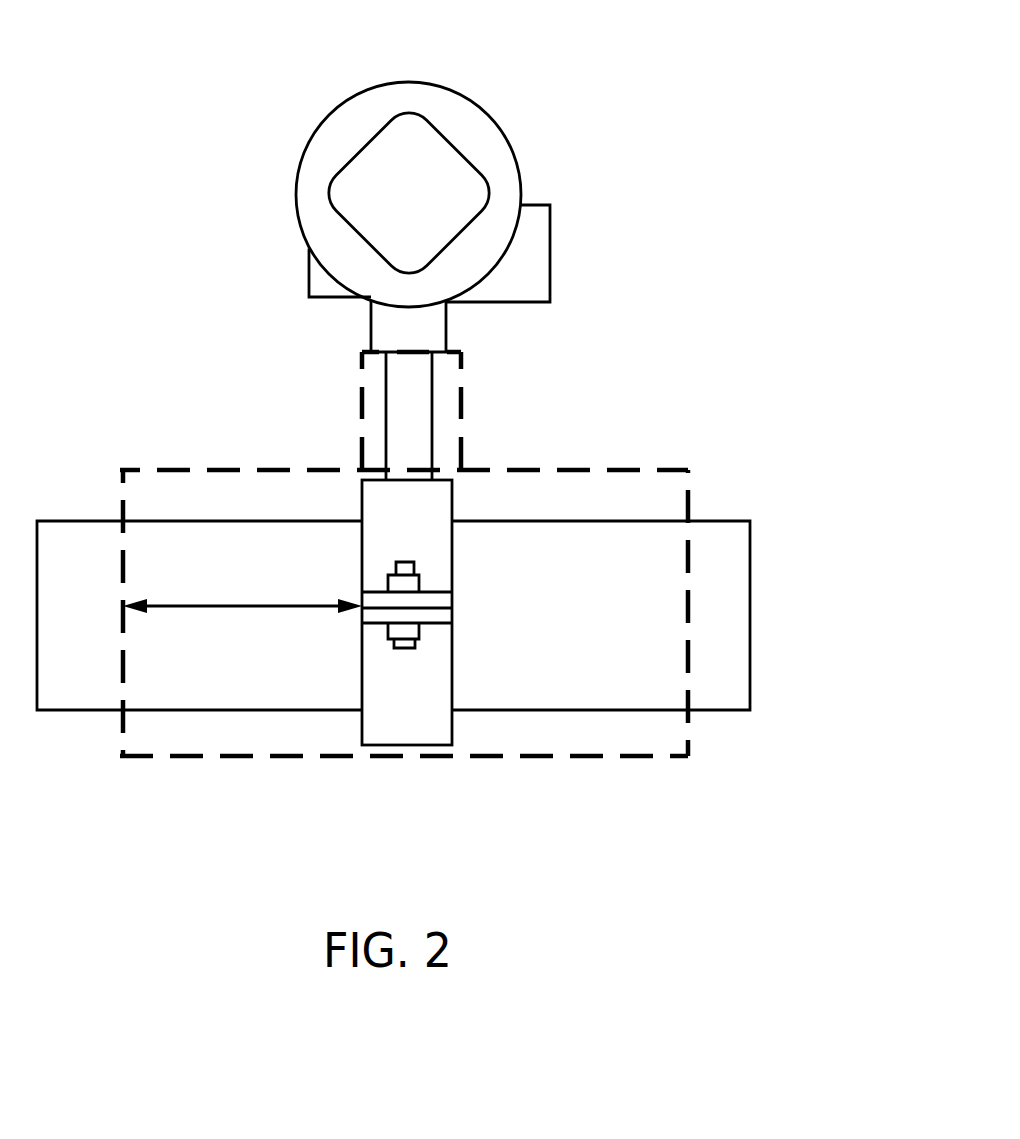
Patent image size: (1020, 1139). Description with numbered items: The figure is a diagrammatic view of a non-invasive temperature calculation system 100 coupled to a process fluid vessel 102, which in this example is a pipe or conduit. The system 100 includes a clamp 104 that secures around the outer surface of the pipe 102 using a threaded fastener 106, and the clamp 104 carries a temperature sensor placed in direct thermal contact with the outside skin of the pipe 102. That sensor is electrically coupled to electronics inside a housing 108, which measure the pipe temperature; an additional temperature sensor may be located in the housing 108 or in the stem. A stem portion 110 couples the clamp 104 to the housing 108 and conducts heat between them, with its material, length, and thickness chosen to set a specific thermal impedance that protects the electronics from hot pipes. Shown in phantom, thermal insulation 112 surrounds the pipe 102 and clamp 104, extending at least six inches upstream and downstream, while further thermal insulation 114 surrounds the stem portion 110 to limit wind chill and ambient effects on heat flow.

The non-invasive temperature calculation system 100 is at (435, 427).
The process fluid vessel 102 is at (723, 520).
The clamp 104 is at (452, 503).
The bolts 106 is at (417, 638).
The housing 108 is at (320, 128).
The stem portion 110 is at (387, 417).
The thermal insulation 112 is at (247, 757).
The thermal insulation about stem portion 114 is at (463, 360).